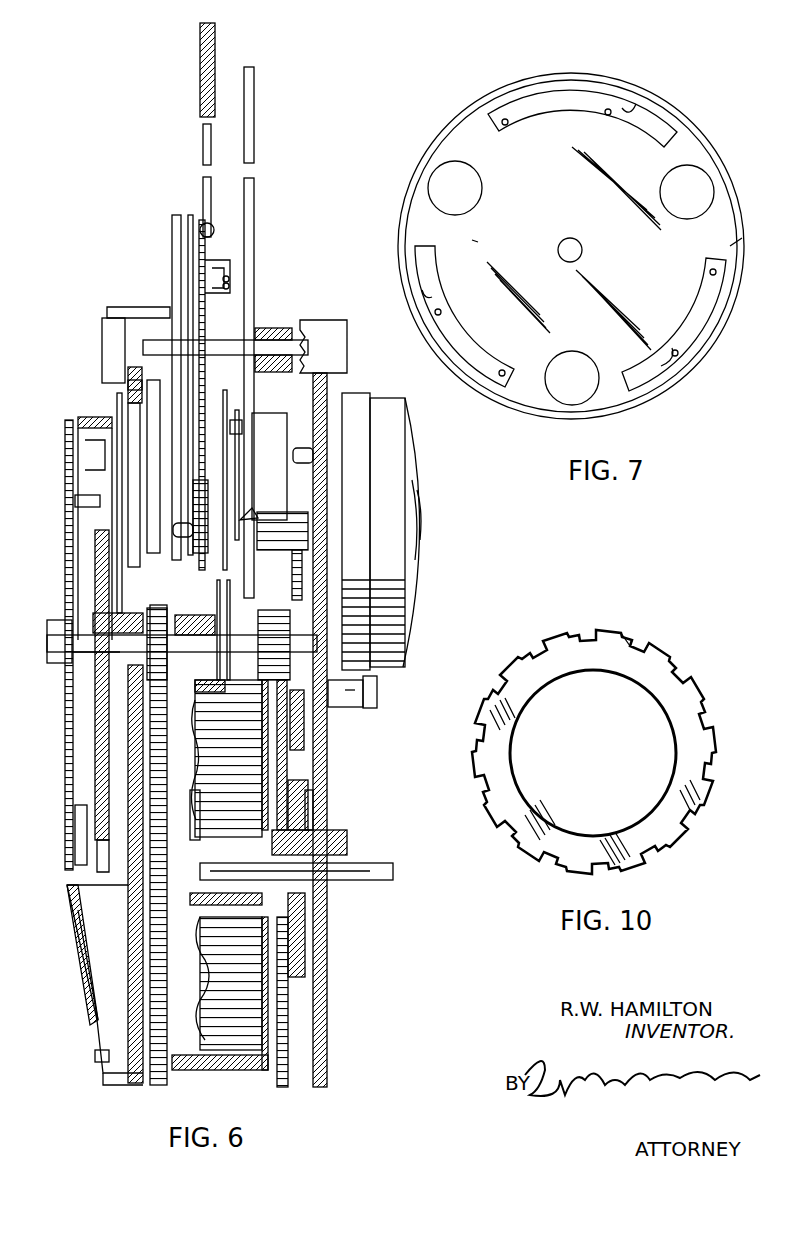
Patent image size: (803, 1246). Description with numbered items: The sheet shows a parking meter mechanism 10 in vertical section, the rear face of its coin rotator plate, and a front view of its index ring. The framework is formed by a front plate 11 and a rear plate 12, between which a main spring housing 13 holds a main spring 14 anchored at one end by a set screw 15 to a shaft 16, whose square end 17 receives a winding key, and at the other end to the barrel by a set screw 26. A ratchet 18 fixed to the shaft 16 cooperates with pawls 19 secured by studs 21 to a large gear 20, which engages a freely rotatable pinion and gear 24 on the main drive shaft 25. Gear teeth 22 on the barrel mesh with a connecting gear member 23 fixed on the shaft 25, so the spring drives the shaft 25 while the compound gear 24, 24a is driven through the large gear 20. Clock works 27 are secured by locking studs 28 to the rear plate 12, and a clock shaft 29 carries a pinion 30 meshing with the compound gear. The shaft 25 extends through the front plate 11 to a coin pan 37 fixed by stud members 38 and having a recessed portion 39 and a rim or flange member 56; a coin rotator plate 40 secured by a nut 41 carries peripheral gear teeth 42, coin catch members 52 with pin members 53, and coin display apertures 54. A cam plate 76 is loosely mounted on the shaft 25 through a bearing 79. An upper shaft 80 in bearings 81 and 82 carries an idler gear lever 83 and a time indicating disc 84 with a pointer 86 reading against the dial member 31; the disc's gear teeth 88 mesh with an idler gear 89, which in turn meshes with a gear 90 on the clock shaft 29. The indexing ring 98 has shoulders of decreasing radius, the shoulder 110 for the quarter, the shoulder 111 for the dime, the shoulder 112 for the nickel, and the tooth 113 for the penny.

In FIG. 6, the parking meter mechanism 10 is at (75, 1007).
In FIG. 6, the front plate 11 is at (128, 895).
In FIG. 6, the rear plate 12 is at (328, 982).
In FIG. 6, the main spring housing 13 is at (262, 1062).
In FIG. 6, the main spring 14 is at (215, 1064).
In FIG. 6, the set screw 15 is at (197, 822).
In FIG. 6, the shaft 16 is at (215, 905).
In FIG. 6, the square end 17 is at (380, 866).
In FIG. 6, the ratchet 18 is at (312, 836).
In FIG. 6, the pawls 19 is at (306, 792).
In FIG. 6, the large gear 20 is at (287, 772).
In FIG. 6, the studs 21 is at (312, 806).
In FIG. 6, the gear teeth 22 is at (168, 1012).
In FIG. 6, the connecting gear member 23 is at (157, 612).
In FIG. 6, the pinion and gear 24 is at (274, 616).
In FIG. 6, the large segment of compound gear 24a is at (304, 742).
In FIG. 6, the main drive shaft 25 is at (76, 656).
In FIG. 6, the set screw 26 is at (197, 727).
In FIG. 6, the clock works 27 is at (412, 502).
In FIG. 6, the locking studs 28 is at (378, 693).
In FIG. 6, the clock shaft 29 is at (242, 520).
In FIG. 6, the pinion 30 is at (263, 548).
In FIG. 6, the dial member 31 is at (205, 97).
In FIG. 6, the coin pan 37 is at (97, 790).
In FIG. 6, the stud members 38 is at (76, 501).
In FIG. 6, the circular recessed portion 39 is at (97, 872).
In FIG. 6, the coin rotator plate 40 is at (65, 748).
In FIG. 7, the coin rotator plate 40 is at (540, 400).
In FIG. 6, the nut 41 is at (47, 640).
In FIG. 6, the gear teeth 42 is at (75, 828).
In FIG. 7, the coin catch members 52 is at (552, 118).
In FIG. 7, the pin member 53 is at (680, 136).
In FIG. 7, the apertures 54 is at (568, 352).
In FIG. 6, the flange member 56 is at (86, 418).
In FIG. 6, the cam plate 76 is at (181, 616).
In FIG. 6, the bearing 79 is at (200, 683).
In FIG. 6, the shaft 80 is at (270, 346).
In FIG. 6, the bearing 81 is at (347, 358).
In FIG. 6, the bearing 82 is at (140, 330).
In FIG. 6, the idler gear lever 83 is at (220, 406).
In FIG. 6, the time indicating disc 84 is at (209, 235).
In FIG. 6, the pointer 86 is at (205, 148).
In FIG. 6, the gear teeth 88 is at (205, 296).
In FIG. 6, the idler gear 89 is at (194, 506).
In FIG. 6, the gear 90 is at (200, 548).
In FIG. 10, the indexing ring 98 is at (594, 671).
In FIG. 10, the shoulder 110 is at (568, 636).
In FIG. 10, the shoulder 111 is at (622, 636).
In FIG. 10, the shoulder 112 is at (636, 648).
In FIG. 10, the tooth 113 is at (656, 654).